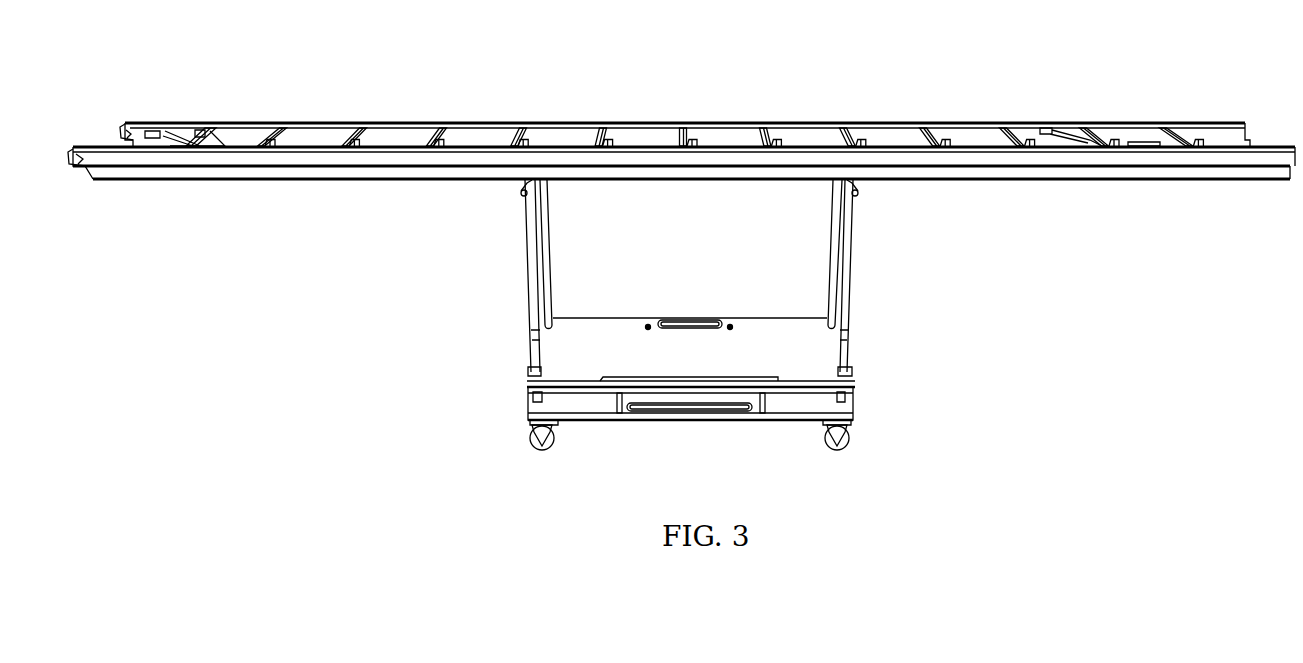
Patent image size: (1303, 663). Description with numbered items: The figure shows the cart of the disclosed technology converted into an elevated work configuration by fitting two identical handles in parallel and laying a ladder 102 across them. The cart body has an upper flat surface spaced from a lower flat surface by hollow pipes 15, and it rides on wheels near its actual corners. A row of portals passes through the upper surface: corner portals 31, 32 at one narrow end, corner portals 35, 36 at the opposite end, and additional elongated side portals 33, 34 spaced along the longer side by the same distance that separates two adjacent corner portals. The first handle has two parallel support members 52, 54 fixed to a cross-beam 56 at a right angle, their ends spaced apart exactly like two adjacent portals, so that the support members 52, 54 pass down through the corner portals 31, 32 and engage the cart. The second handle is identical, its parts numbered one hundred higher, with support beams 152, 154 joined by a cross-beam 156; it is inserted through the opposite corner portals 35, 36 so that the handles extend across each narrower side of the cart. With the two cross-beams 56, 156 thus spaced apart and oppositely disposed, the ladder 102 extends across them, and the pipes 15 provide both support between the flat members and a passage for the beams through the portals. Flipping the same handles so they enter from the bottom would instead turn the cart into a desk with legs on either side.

The ladder 102 is at (468, 127).
The support member 52 is at (543, 218).
The support member 54 is at (530, 262).
The cross-beam 56 is at (521, 194).
The corner portal 32 is at (540, 325).
The corner portal 31 is at (529, 369).
The pipes 15 is at (536, 397).
The elongated side portal 33 is at (648, 326).
The elongated side portal 34 is at (730, 326).
The corner portal 35 is at (838, 325).
The corner portal 36 is at (851, 369).
The support beam 152 is at (836, 243).
The support beam 154 is at (850, 218).
The cross-beam 156 is at (858, 194).